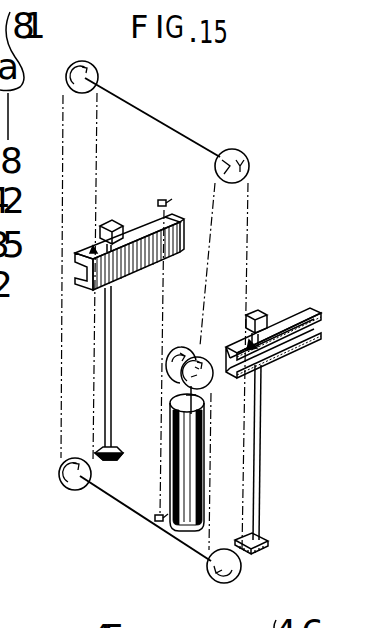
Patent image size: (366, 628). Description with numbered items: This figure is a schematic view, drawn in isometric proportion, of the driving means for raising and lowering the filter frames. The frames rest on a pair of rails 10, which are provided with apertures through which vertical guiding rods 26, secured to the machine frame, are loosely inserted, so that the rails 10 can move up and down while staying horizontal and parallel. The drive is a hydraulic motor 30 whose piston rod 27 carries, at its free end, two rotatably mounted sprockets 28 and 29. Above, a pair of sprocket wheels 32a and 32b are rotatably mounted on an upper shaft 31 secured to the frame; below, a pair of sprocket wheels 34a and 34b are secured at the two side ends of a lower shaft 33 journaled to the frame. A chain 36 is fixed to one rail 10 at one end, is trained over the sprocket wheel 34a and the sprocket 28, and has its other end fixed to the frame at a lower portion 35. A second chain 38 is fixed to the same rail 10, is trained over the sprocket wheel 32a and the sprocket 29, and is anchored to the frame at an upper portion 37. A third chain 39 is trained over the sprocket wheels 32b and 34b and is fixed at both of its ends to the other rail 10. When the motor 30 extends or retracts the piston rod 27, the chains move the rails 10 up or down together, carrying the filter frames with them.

The rail 10 is at (135, 233).
The vertical guiding rod 26 is at (112, 290).
The piston rod 27 is at (183, 400).
The sprocket 28 is at (184, 388).
The sprocket 29 is at (170, 362).
The hydraulic motor 30 is at (170, 528).
The upper shaft 31 is at (150, 120).
The sprocket wheel 32a is at (244, 150).
The sprocket wheel 32b is at (79, 62).
The lower shaft 33 is at (108, 496).
The sprocket wheel 34a is at (240, 574).
The sprocket wheel 34b is at (58, 483).
The lower portion 35 is at (160, 523).
The chain 36 is at (255, 450).
The upper portion 37 is at (186, 143).
The chain 38 is at (250, 270).
The chain 39 is at (56, 318).